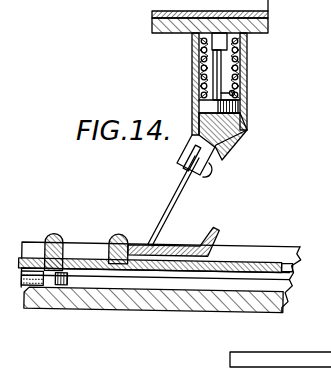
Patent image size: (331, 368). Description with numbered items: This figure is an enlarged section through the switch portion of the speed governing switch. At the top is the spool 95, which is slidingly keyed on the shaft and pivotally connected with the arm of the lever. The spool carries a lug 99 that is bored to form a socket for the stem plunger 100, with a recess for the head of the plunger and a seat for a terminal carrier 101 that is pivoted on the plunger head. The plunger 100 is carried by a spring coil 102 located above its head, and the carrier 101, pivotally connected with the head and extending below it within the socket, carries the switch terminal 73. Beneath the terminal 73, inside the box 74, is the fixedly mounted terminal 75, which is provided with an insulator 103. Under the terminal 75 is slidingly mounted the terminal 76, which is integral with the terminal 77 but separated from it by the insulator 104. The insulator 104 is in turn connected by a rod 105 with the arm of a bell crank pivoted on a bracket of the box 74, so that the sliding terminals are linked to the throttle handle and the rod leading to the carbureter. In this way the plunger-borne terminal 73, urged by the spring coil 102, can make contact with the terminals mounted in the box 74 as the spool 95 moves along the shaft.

The spool 95 is at (270, 23).
The lug 99 is at (192, 79).
The stem plunger 100 is at (247, 80).
The terminal carrier 101 is at (247, 128).
The spring coil 102 is at (247, 56).
The switch terminal 73 is at (176, 205).
The box 74 is at (113, 303).
The terminal 75 is at (216, 229).
The terminal 76 is at (250, 258).
The terminal 77 is at (32, 260).
The insulator 103 is at (118, 234).
The insulator 104 is at (57, 233).
The rod 105 is at (25, 288).